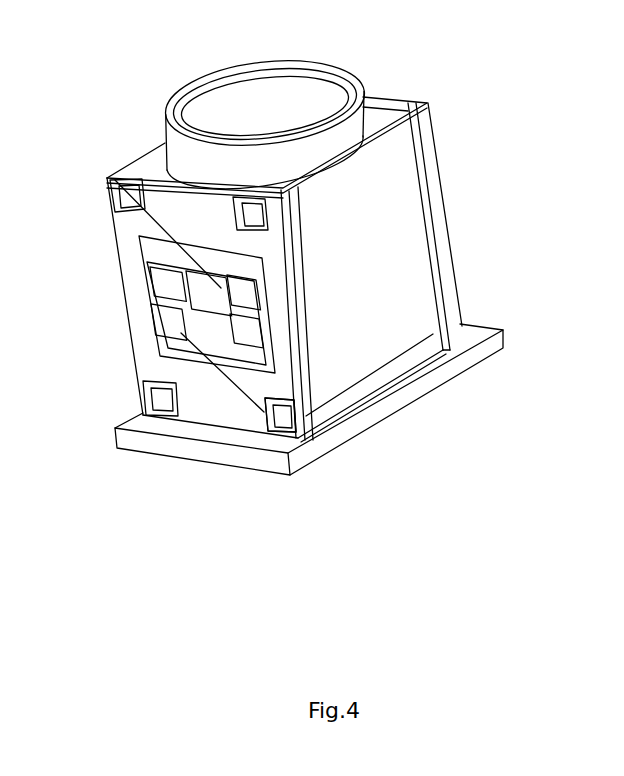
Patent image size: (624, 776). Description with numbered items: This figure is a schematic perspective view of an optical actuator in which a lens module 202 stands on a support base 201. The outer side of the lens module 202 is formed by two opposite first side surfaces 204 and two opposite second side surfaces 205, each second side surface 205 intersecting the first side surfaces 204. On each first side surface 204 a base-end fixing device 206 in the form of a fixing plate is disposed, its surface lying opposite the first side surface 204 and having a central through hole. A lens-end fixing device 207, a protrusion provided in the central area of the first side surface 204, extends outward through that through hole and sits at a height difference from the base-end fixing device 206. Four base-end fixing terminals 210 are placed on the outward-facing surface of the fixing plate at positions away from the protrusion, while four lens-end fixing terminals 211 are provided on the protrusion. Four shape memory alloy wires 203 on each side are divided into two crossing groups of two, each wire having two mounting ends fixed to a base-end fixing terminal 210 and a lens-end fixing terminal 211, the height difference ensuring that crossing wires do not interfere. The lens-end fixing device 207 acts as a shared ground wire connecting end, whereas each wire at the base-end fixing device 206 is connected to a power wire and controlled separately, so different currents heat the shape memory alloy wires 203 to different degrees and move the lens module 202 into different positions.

The support base 201 is at (347, 422).
The lens module 202 is at (440, 103).
The shape memory alloy wires 203 is at (255, 392).
The first side surfaces 204 is at (200, 393).
The second side surfaces 205 is at (333, 392).
The base-end fixing device 206 is at (262, 308).
The lens-end fixing device 207 is at (205, 307).
The base-end fixing terminal 210 is at (117, 176).
The lens-end fixing terminal 211 is at (155, 322).